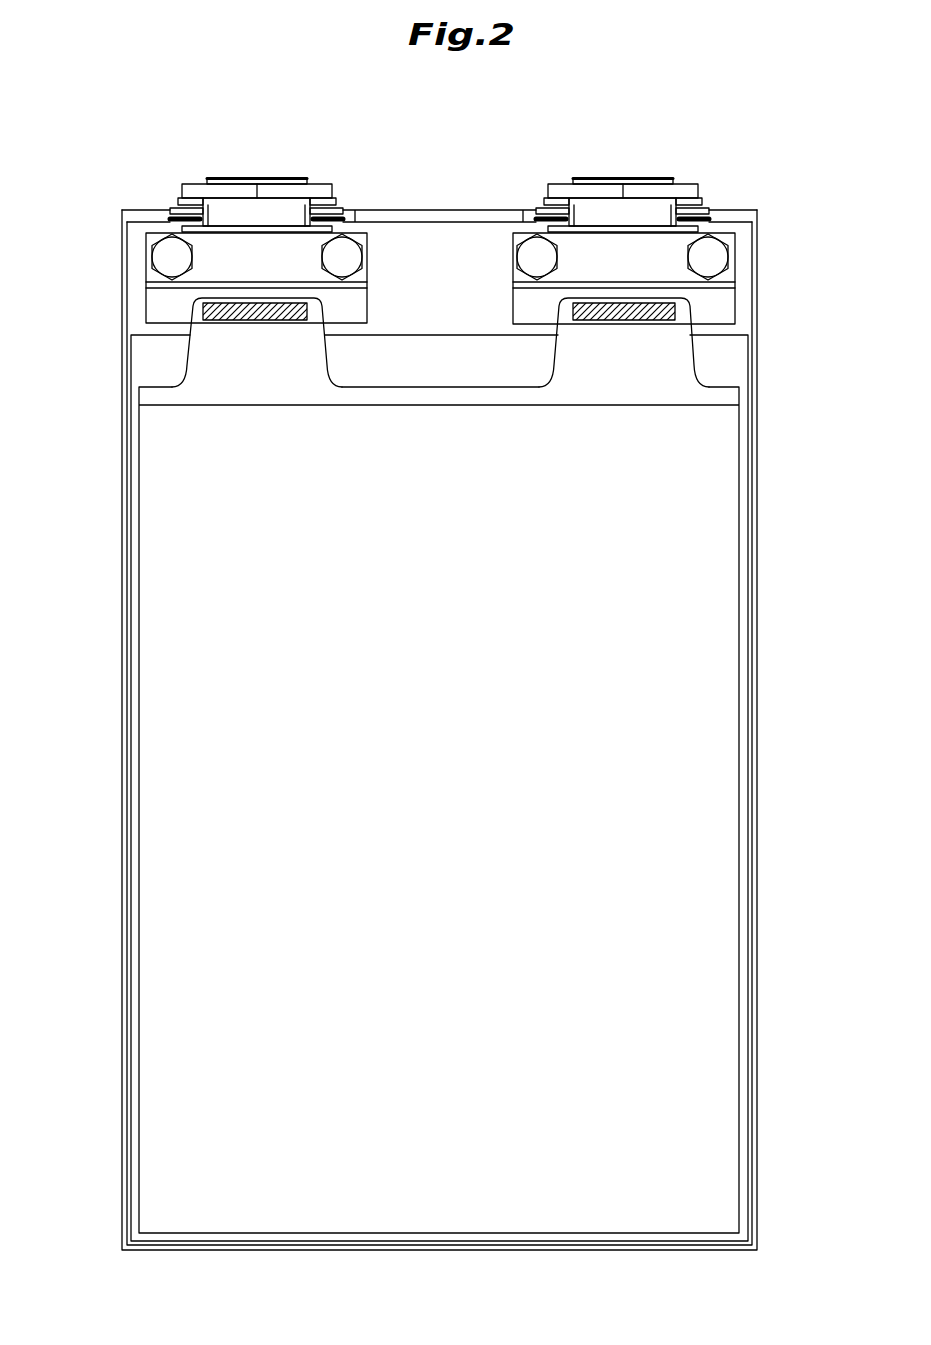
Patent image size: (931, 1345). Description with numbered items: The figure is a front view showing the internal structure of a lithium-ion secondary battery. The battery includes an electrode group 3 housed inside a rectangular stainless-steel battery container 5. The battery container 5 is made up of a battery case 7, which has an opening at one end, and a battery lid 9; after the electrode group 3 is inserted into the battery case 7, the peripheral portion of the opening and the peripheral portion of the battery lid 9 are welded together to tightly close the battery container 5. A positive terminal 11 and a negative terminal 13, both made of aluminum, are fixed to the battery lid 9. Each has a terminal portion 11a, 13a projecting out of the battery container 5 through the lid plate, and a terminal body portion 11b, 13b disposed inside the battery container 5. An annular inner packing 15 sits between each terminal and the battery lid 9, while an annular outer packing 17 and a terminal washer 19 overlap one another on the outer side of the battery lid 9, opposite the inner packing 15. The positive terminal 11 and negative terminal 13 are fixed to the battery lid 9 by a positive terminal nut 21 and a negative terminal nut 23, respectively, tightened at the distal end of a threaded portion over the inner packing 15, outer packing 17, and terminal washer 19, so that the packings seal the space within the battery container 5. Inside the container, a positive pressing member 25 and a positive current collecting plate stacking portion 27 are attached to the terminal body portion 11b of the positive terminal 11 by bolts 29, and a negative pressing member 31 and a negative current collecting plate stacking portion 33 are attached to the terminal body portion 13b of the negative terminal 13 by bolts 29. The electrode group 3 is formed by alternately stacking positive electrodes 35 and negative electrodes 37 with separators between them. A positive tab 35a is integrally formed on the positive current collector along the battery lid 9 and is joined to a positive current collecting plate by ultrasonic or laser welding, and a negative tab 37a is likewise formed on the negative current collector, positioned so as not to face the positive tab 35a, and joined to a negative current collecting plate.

The electrode group 3 is at (703, 728).
The battery container 5 is at (758, 626).
The battery case 7 is at (122, 526).
The battery lid 9 is at (143, 210).
The positive terminal 11 is at (625, 149).
The terminal portion 11a is at (580, 178).
The terminal body portion 11b is at (647, 227).
The negative terminal 13 is at (252, 149).
The terminal portion 13a is at (293, 178).
The terminal body portion 13b is at (225, 220).
The inner packing 15 is at (333, 216).
The outer packing 17 is at (327, 206).
The terminal washer 19 is at (316, 205).
The positive terminal nut 21 is at (616, 178).
The negative terminal nut 23 is at (259, 178).
The positive pressing member 25 is at (670, 270).
The positive current collecting plate stacking portion 27 is at (735, 287).
The bolt 29 is at (168, 262).
The negative pressing member 31 is at (205, 272).
The negative current collecting plate stacking portion 33 is at (172, 288).
The positive electrode 35 is at (572, 335).
The positive tab 35a is at (655, 330).
The negative electrode 37 is at (172, 608).
The negative tab 37a is at (262, 362).